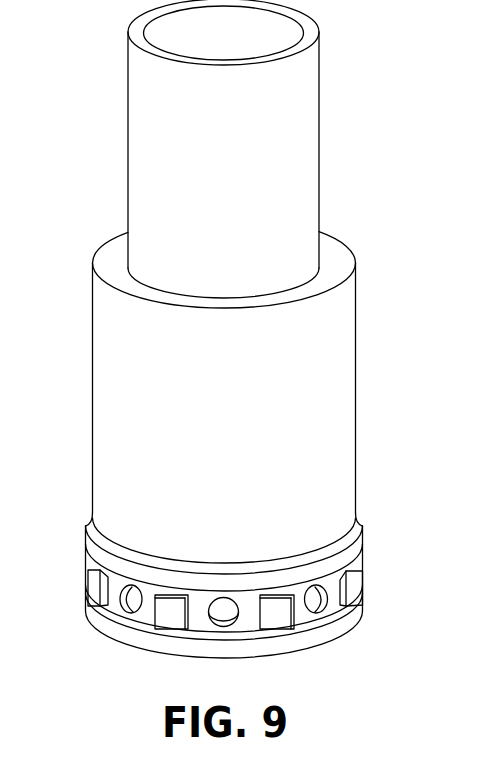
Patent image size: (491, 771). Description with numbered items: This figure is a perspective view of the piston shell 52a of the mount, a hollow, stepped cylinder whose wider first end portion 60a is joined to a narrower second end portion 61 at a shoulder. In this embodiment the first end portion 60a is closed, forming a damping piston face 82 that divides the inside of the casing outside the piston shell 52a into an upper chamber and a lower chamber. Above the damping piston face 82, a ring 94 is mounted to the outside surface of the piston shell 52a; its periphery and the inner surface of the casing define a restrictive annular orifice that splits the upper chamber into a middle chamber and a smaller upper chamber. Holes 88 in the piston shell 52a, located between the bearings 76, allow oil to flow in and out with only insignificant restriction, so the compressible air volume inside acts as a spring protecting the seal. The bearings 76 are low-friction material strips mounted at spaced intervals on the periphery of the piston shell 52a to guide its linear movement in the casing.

The second end portion 61 is at (158, 139).
The first end portion 60a is at (125, 368).
The piston shell 52a is at (92, 476).
The ring 94 is at (115, 565).
The holes 88 is at (318, 602).
The bearing 76 is at (358, 577).
The damping piston face 82 is at (123, 630).